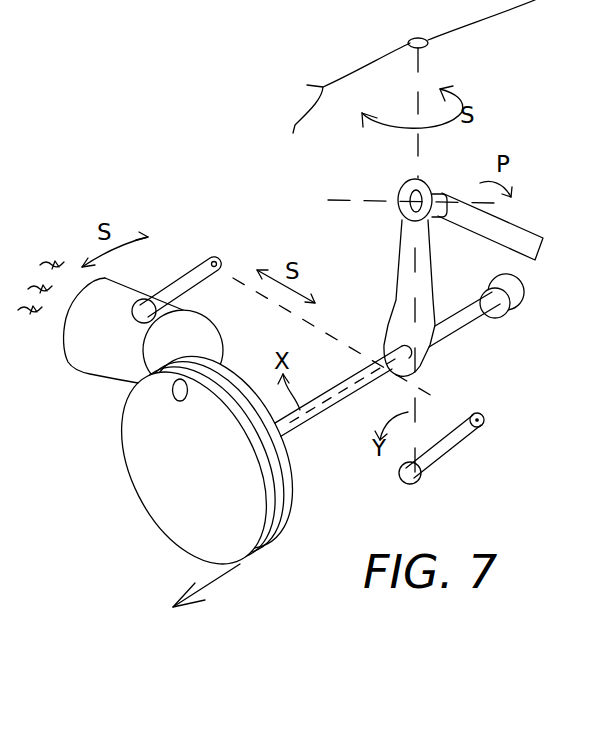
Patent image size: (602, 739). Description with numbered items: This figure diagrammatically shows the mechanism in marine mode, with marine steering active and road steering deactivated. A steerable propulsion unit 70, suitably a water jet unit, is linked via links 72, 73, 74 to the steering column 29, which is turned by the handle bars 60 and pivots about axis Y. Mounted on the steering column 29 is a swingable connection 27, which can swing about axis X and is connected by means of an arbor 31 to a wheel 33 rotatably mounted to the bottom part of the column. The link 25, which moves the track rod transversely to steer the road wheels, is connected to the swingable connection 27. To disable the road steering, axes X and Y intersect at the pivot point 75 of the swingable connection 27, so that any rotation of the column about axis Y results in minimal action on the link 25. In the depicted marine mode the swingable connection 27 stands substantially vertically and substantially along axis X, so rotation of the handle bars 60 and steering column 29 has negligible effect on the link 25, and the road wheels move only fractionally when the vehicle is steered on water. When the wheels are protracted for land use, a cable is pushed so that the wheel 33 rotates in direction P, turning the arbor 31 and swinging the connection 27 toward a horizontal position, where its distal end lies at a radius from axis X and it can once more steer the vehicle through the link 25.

The link 25 is at (537, 228).
The swingable connection 27 is at (410, 243).
The steering column 29 is at (430, 50).
The arbor 31 is at (305, 418).
The wheel 33 is at (156, 525).
The handle bars 60 is at (407, 91).
The steerable propulsion unit 70 is at (82, 360).
The link 72 is at (190, 272).
The link 73 is at (447, 407).
The link 74 is at (442, 474).
The pivot point 75 is at (389, 328).